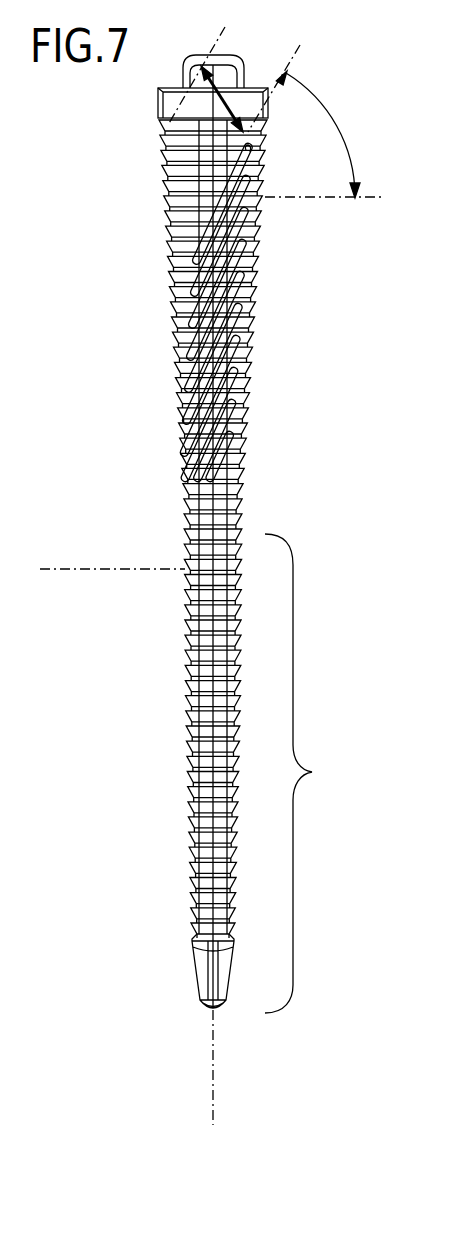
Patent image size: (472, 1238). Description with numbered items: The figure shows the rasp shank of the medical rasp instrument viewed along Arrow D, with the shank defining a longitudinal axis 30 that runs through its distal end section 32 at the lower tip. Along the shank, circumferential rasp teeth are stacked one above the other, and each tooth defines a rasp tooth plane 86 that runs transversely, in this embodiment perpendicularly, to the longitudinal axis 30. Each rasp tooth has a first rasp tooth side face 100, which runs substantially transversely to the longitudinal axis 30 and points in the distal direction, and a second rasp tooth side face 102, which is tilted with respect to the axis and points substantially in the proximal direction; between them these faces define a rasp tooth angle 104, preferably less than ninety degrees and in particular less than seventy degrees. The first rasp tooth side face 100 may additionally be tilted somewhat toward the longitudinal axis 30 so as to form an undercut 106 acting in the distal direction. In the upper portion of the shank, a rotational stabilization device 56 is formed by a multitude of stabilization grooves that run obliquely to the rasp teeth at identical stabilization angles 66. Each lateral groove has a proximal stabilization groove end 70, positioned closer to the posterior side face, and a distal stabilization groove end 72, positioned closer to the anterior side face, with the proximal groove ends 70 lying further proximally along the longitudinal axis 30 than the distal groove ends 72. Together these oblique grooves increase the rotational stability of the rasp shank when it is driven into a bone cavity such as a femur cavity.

The longitudinal axis 30 is at (215, 1080).
The distal end section 32 is at (312, 772).
The rotational stabilization device 56 is at (194, 326).
The stabilization angle 66 is at (345, 135).
The proximal stabilization groove end 70 is at (243, 150).
The distal stabilization groove end 72 is at (185, 228).
The rasp tooth plane 86 is at (90, 567).
The first rasp tooth side face 100 is at (165, 192).
The second rasp tooth side face 102 is at (165, 180).
The rasp tooth angle 104 is at (247, 90).
The undercut 106 is at (256, 263).